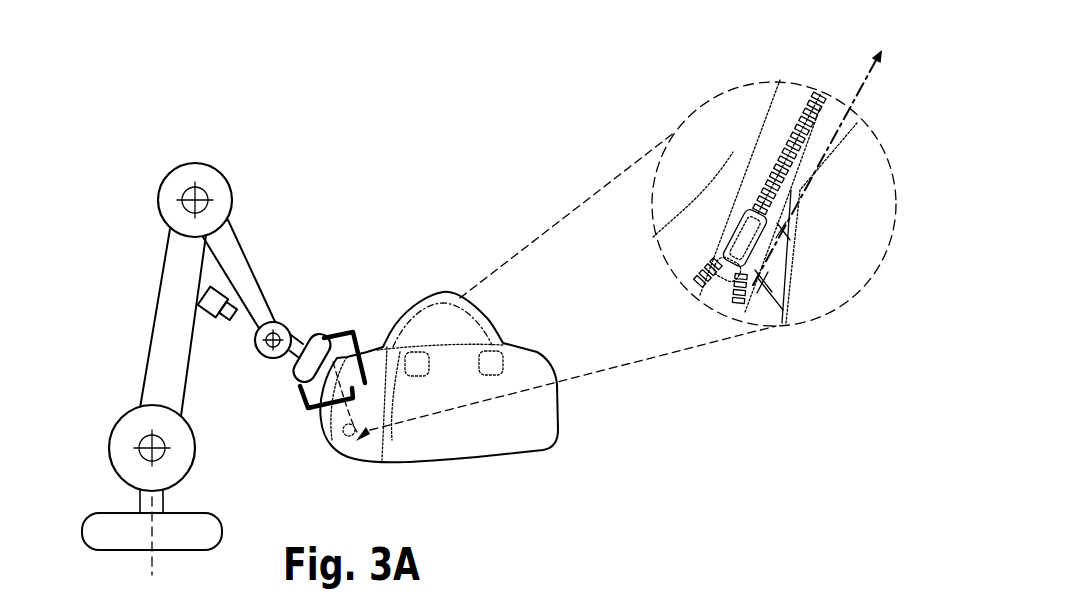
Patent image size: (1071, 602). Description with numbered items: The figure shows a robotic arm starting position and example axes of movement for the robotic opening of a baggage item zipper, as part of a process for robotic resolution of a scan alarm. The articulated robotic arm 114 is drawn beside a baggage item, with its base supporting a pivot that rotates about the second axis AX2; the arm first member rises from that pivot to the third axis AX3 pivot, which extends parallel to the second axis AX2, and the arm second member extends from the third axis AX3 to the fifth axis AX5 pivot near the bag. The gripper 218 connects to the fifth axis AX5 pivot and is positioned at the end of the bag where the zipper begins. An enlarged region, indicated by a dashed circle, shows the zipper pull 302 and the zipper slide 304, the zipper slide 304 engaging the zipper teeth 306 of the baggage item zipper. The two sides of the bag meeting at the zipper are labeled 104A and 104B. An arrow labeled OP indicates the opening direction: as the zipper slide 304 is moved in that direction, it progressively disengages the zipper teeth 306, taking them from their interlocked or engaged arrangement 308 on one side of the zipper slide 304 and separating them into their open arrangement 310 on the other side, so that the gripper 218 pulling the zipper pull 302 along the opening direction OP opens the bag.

The second articulated robotic arm 114 is at (162, 394).
The third axis AX3 is at (157, 190).
The second axis AX2 is at (120, 441).
The fifth axis AX5 is at (307, 321).
The gripper 218 is at (290, 369).
The zipper pull 302 is at (608, 296).
The zipper slide 304 is at (816, 219).
The zipper teeth 306 is at (712, 167).
The interlocked or engaged arrangement 308 is at (783, 115).
The open arrangement 310 is at (721, 286).
The first bag portion 104A is at (732, 161).
The second bag portion 104B is at (875, 254).
The opening direction OP is at (897, 61).